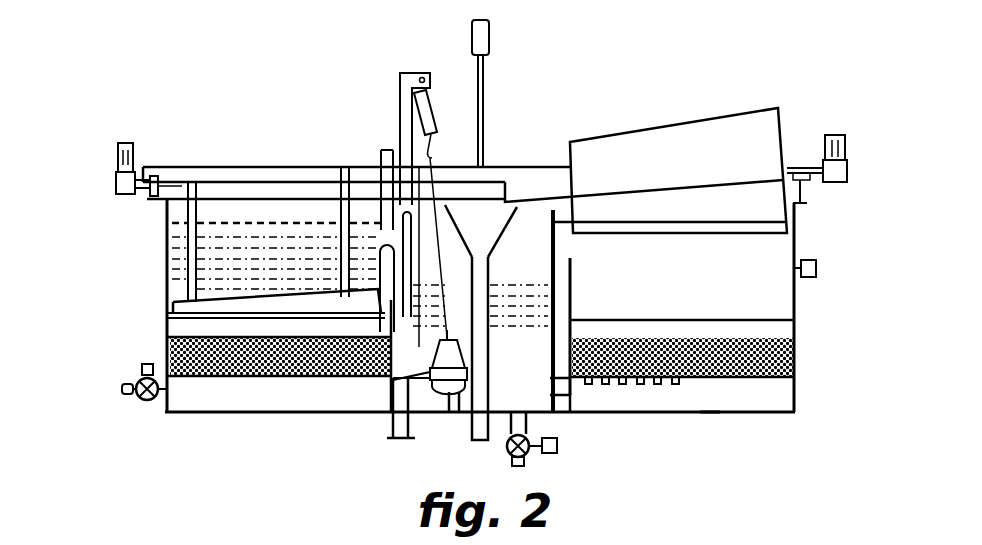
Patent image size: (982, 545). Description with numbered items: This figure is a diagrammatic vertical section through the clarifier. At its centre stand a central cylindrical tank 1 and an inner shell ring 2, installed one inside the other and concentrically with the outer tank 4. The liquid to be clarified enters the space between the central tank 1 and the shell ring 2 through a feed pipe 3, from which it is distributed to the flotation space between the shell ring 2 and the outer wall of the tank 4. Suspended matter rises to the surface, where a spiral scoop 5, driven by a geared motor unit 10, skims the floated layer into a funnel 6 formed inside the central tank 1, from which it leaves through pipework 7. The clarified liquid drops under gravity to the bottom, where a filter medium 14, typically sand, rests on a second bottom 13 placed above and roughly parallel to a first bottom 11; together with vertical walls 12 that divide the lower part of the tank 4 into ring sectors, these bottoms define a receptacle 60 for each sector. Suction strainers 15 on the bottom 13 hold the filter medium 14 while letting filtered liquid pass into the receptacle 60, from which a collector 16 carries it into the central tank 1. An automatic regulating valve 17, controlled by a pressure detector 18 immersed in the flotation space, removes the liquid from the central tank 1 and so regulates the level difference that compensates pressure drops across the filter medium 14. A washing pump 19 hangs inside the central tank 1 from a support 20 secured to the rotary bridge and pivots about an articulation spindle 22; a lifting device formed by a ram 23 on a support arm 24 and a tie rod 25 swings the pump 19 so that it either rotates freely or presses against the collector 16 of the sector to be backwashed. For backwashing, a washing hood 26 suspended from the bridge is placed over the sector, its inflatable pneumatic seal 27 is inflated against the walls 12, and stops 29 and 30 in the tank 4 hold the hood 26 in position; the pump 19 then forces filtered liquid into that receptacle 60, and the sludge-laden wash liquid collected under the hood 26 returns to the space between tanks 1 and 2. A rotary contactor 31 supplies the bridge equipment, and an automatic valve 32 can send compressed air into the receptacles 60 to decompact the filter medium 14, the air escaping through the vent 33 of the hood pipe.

The central cylindrical tank 1 is at (550, 267).
The inner shell ring 2 is at (573, 272).
The feed pipe 3 is at (392, 432).
The outer tank 4 is at (795, 298).
The spiral scoop 5 is at (665, 140).
The funnel 6 is at (510, 225).
The pipework 7 is at (495, 362).
The geared motor unit 10 is at (830, 130).
The first bottom 11 is at (700, 417).
The vertical walls 12 is at (683, 327).
The second bottom 13 is at (738, 378).
The filter medium 14 is at (773, 357).
The suction strainers 15 is at (623, 383).
The collector 16 is at (543, 388).
The automatic regulating valve 17 is at (560, 445).
The pressure detector 18 is at (820, 257).
The washing pump 19 is at (452, 392).
The support 20 is at (423, 255).
The articulation spindle 22 is at (393, 378).
The ram 23 is at (435, 115).
The support arm 24 is at (400, 117).
The tie rod 25 is at (445, 312).
The washing hood 26 is at (247, 303).
The inflatable pneumatic seal 27 is at (177, 320).
The stop 29 is at (165, 273).
The stop 30 is at (380, 273).
The rotary contactor 31 is at (489, 30).
The automatic valve 32 is at (145, 400).
The vent 33 is at (382, 158).
The receptacle 60 is at (263, 403).